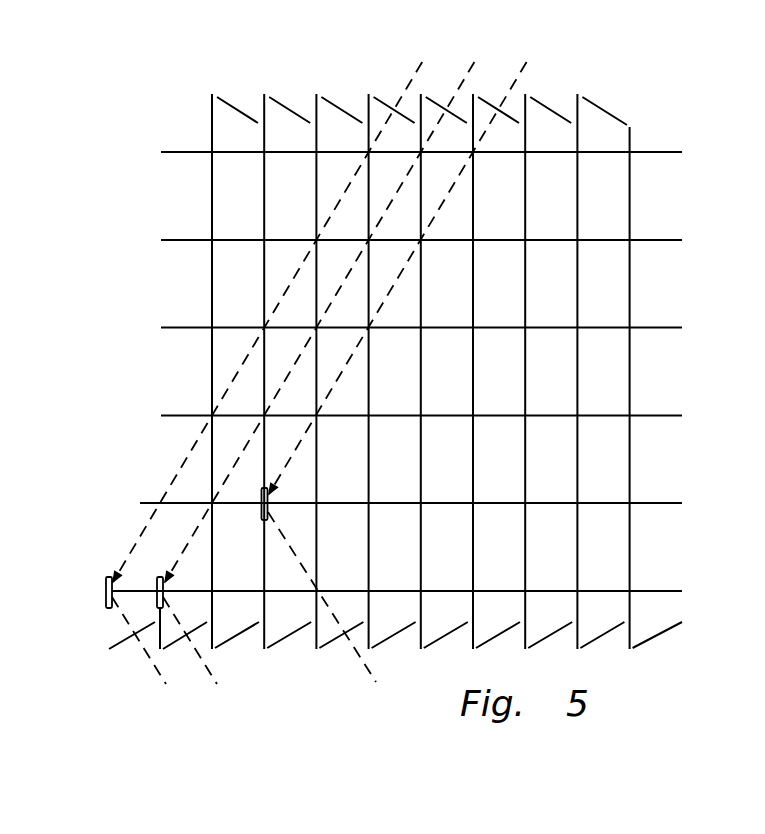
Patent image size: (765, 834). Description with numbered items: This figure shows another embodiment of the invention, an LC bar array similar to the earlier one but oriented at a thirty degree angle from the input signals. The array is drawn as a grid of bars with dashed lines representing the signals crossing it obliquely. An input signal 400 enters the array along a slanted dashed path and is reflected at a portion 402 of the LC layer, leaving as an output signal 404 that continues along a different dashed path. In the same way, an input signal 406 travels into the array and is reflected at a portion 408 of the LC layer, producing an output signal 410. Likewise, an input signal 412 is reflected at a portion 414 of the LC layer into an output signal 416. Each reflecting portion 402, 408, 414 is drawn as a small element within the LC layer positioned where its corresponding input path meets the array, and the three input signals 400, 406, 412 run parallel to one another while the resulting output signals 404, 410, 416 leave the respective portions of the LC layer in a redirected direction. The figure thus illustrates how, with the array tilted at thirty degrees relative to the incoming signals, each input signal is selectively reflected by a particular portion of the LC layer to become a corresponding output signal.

The input signal 400 is at (407, 87).
The portion of the LC layer 402 is at (106, 598).
The output signal 404 is at (153, 657).
The input signal 406 is at (459, 87).
The portion of the LC layer 408 is at (160, 577).
The output signal 410 is at (205, 657).
The input signal 412 is at (511, 87).
The portion of the LC layer 414 is at (262, 508).
The output signal 416 is at (362, 657).